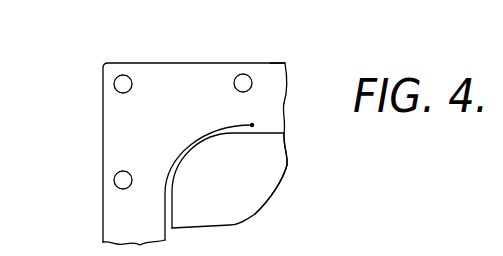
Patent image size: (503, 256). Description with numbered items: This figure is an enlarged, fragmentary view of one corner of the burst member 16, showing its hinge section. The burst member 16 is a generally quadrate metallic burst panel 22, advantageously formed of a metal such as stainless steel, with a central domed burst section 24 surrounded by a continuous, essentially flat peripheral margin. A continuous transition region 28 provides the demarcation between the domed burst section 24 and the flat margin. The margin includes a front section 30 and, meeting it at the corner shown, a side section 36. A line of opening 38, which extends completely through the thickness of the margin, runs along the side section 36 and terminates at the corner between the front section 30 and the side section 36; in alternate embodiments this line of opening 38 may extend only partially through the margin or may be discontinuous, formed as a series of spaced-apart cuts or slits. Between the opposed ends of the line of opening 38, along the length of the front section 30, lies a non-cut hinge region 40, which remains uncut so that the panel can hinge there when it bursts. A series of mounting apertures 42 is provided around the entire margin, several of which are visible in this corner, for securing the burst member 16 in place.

The burst member 16 is at (294, 183).
The burst panel 22 is at (172, 63).
The central domed burst section 24 is at (247, 202).
The transition region 28 is at (267, 133).
The front section 30 is at (285, 63).
The side section 36 is at (112, 233).
The line of opening 38 is at (183, 150).
The hinge region 40 is at (285, 104).
The mounting apertures 42 is at (116, 176).